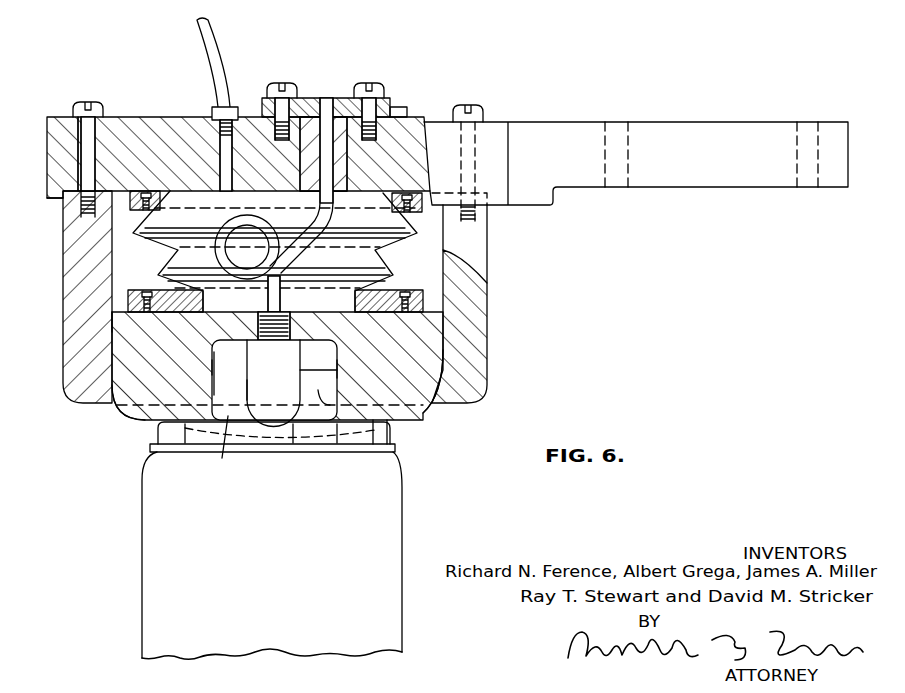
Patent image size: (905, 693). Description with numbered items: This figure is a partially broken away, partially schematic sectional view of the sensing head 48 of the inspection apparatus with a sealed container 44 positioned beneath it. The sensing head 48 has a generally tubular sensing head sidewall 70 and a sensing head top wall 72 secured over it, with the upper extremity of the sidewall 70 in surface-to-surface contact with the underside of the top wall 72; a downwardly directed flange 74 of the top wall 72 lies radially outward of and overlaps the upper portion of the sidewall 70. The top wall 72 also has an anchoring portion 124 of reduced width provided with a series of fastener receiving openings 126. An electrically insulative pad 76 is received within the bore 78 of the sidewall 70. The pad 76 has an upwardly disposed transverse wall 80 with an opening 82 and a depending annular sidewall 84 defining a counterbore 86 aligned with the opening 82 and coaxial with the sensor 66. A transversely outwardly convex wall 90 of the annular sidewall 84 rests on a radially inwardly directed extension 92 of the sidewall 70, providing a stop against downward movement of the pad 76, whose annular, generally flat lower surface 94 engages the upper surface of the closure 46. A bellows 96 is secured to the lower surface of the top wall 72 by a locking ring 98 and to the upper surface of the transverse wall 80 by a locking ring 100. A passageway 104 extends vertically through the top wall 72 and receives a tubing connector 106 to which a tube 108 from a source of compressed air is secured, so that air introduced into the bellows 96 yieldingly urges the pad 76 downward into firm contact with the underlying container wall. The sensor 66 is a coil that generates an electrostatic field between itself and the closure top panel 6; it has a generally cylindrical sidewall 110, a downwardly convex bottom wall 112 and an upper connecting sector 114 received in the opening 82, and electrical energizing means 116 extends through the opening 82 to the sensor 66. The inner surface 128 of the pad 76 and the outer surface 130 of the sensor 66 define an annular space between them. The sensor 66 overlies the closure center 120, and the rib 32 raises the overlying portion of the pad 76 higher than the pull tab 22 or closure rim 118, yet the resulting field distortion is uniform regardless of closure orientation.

The closure top panel 6 is at (293, 443).
The pull tab 22 is at (337, 443).
The rib 32 is at (187, 430).
The sealed container 44 is at (272, 555).
The closure 46 is at (158, 434).
The sensing head 48 is at (124, 117).
The sensor 66 is at (274, 380).
The sensing head sidewall 70 is at (63, 285).
The sensing head top wall 72 is at (58, 116).
The downwardly directed flange 74 is at (55, 199).
The insulative pad 76 is at (430, 357).
The bore 78 is at (110, 251).
The transverse wall 80 is at (229, 372).
The opening 82 is at (273, 383).
The annular sidewall 84 is at (427, 410).
The counterbore 86 is at (219, 445).
The transversely outwardly convex wall 90 is at (112, 322).
The radially inwardly directed extension 92 is at (117, 390).
The lower surface 94 is at (395, 432).
The bellows 96 is at (402, 244).
The locking ring 98 is at (160, 197).
The locking ring 100 is at (167, 289).
The passageway 104 is at (233, 158).
The tubing connector 106 is at (212, 113).
The tube 108 is at (223, 44).
The cylindrical sidewall 110 is at (247, 386).
The bottom wall 112 is at (321, 387).
The upper connecting sector 114 is at (281, 305).
The electrical energizing means 116 is at (218, 235).
The closure rim 118 is at (393, 460).
The closure center 120 is at (273, 440).
The anchoring portion 124 is at (683, 122).
The fastener receiving openings 126 is at (616, 125).
The inner surface 128 is at (205, 369).
The outer surface 130 is at (343, 371).